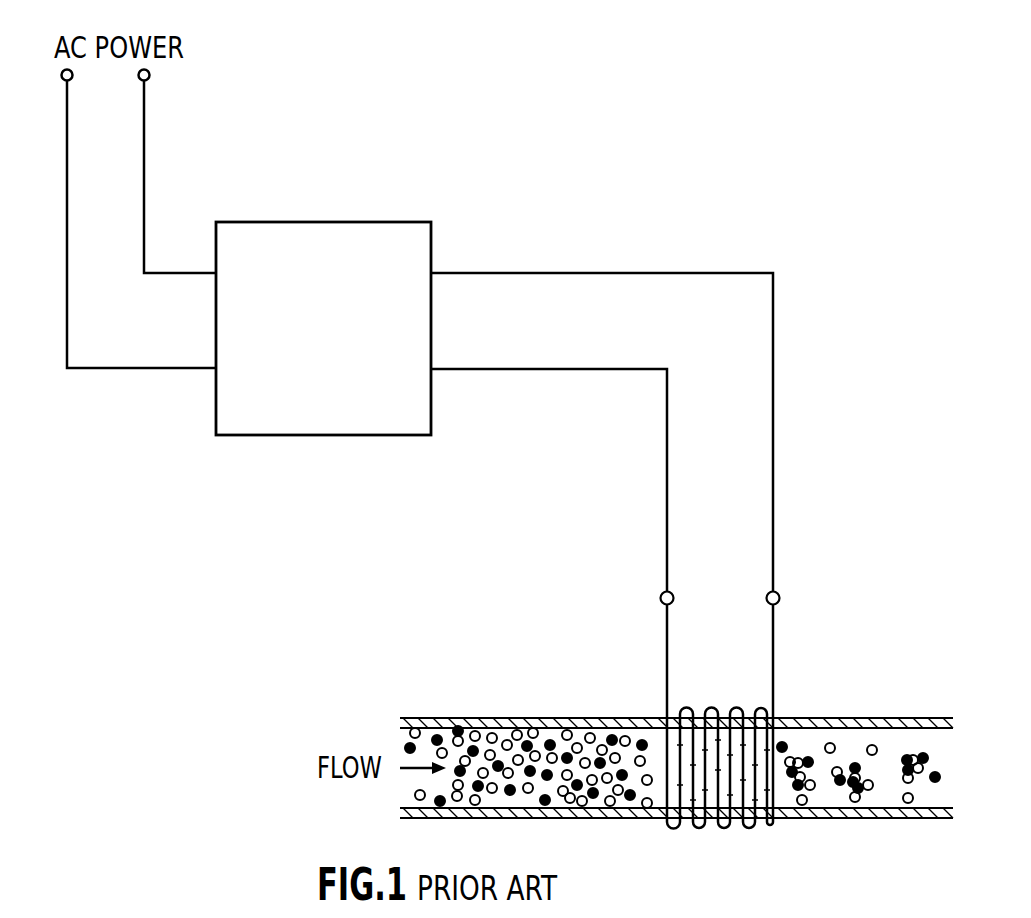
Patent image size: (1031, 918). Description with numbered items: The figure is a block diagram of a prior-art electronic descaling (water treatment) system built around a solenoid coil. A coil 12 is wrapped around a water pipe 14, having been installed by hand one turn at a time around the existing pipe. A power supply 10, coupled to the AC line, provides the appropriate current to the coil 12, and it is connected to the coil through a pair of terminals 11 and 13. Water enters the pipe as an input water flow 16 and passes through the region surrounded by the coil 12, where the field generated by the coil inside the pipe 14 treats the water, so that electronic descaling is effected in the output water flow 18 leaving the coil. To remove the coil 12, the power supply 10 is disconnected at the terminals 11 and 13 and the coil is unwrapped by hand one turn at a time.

The power supply 10 is at (307, 222).
The terminal 11 is at (659, 600).
The coil 12 is at (755, 832).
The terminal 13 is at (781, 596).
The water pipe 14 is at (547, 718).
The input water flow 16 is at (398, 748).
The output water flow 18 is at (942, 787).